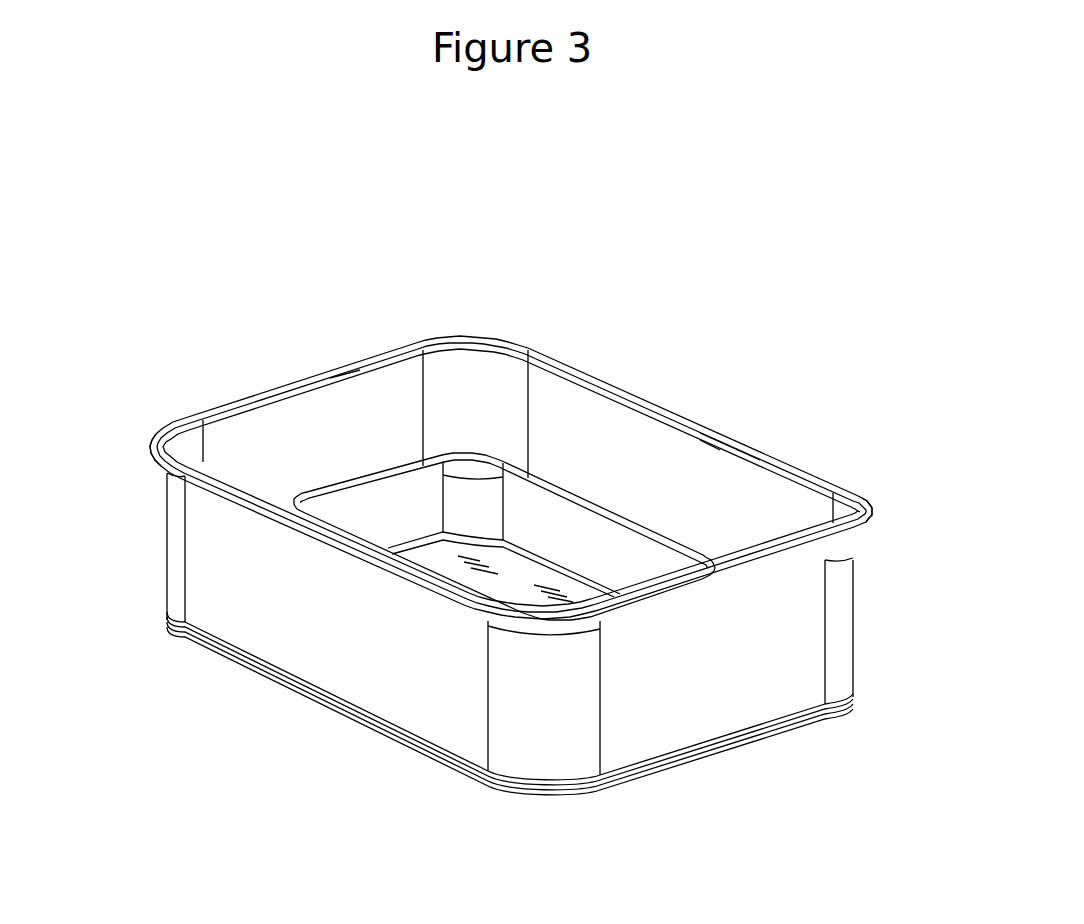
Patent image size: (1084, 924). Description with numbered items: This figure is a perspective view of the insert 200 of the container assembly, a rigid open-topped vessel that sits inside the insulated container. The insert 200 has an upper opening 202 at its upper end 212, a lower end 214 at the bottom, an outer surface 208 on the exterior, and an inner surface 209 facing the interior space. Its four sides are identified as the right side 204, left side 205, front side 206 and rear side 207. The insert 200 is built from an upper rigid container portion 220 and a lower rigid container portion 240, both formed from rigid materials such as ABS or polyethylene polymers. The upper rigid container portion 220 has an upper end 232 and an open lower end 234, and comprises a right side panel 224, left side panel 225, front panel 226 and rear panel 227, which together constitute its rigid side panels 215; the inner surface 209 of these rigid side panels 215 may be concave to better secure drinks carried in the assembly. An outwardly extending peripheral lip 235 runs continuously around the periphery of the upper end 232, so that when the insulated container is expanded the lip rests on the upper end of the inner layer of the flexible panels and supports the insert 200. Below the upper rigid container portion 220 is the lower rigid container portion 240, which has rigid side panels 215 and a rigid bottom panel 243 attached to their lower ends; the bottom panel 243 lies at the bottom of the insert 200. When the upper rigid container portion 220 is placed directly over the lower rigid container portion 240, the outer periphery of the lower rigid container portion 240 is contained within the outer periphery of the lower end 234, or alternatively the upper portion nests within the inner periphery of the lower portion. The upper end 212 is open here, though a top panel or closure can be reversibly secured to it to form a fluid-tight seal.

The insert 200 is at (160, 218).
The upper opening 202 is at (627, 439).
The right side 204 is at (713, 705).
The left side 205 is at (222, 397).
The front side 206 is at (688, 427).
The rear side 207 is at (323, 660).
The outer surface 208 is at (233, 610).
The inner surface 209 is at (478, 392).
The upper end 212 is at (872, 520).
The lower end 214 is at (845, 708).
The rigid side panels 215 is at (778, 630).
The upper rigid container portion 220 is at (388, 400).
The right side panel 224 is at (653, 715).
The left side panel 225 is at (408, 392).
The front panel 226 is at (750, 490).
The rear panel 227 is at (420, 700).
The upper end 232 is at (152, 447).
The lower end 234 is at (165, 618).
The peripheral lip 235 is at (683, 453).
The lower rigid container portion 240 is at (383, 515).
The bottom panel 243 is at (520, 570).